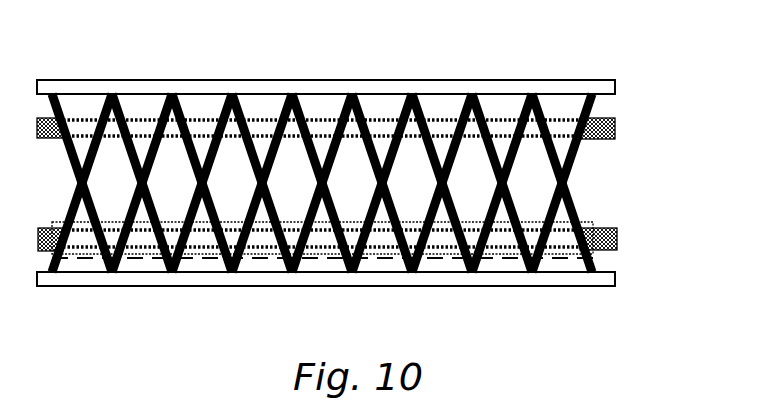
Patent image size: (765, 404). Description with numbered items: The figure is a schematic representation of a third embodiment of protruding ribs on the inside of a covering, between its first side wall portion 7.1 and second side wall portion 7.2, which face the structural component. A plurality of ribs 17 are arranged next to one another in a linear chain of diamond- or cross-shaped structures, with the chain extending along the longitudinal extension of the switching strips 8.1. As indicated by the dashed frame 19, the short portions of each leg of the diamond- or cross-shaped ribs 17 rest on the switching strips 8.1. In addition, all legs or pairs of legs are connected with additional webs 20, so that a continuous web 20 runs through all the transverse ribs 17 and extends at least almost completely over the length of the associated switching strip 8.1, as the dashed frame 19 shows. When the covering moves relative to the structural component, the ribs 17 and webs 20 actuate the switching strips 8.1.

The first side wall portion 7.1 is at (153, 90).
The second side wall portion 7.2 is at (143, 284).
The switching strip 8.1 is at (615, 120).
The protruding ribs 17 is at (513, 203).
The dashed frame 19 is at (565, 259).
The additional webs 20 is at (504, 247).